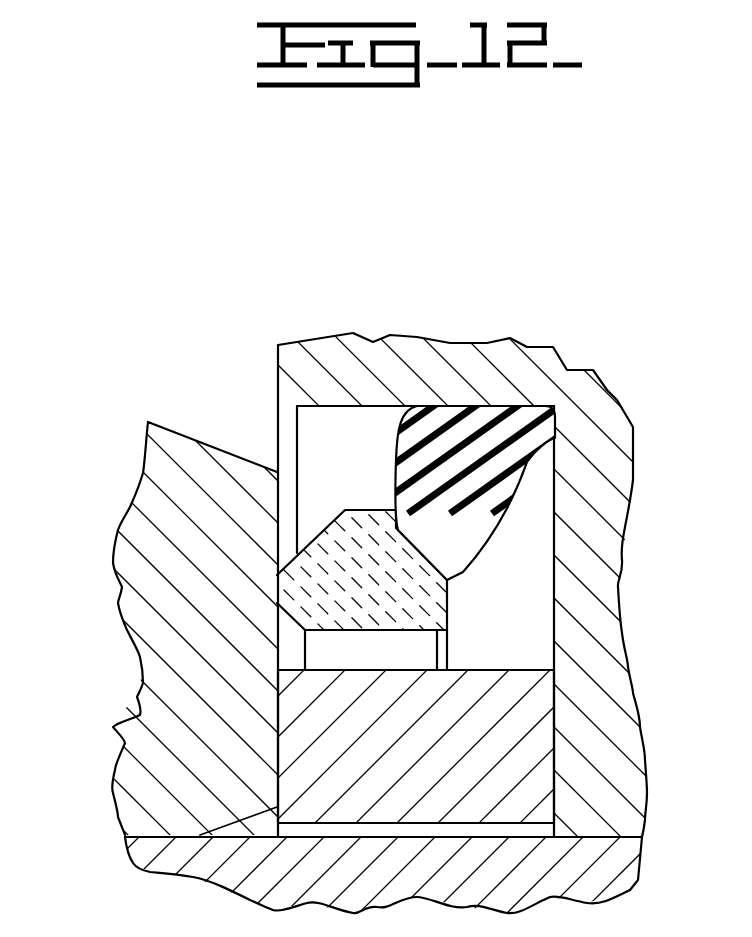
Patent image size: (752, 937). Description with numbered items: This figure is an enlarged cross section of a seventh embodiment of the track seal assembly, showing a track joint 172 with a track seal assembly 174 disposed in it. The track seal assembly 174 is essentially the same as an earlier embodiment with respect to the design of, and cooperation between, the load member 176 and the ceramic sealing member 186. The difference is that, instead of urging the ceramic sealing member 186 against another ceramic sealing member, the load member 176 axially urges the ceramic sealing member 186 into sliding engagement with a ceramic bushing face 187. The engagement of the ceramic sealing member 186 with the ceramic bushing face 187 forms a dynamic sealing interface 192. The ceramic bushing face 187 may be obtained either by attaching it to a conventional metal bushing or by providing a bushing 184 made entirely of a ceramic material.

The track joint 172 is at (255, 435).
The track seal assembly 174 is at (352, 442).
The load member 176 is at (490, 417).
The bushing 184 is at (162, 468).
The ceramic sealing member 186 is at (317, 592).
The ceramic bushing face 187 is at (287, 510).
The dynamic sealing interface 192 is at (277, 583).